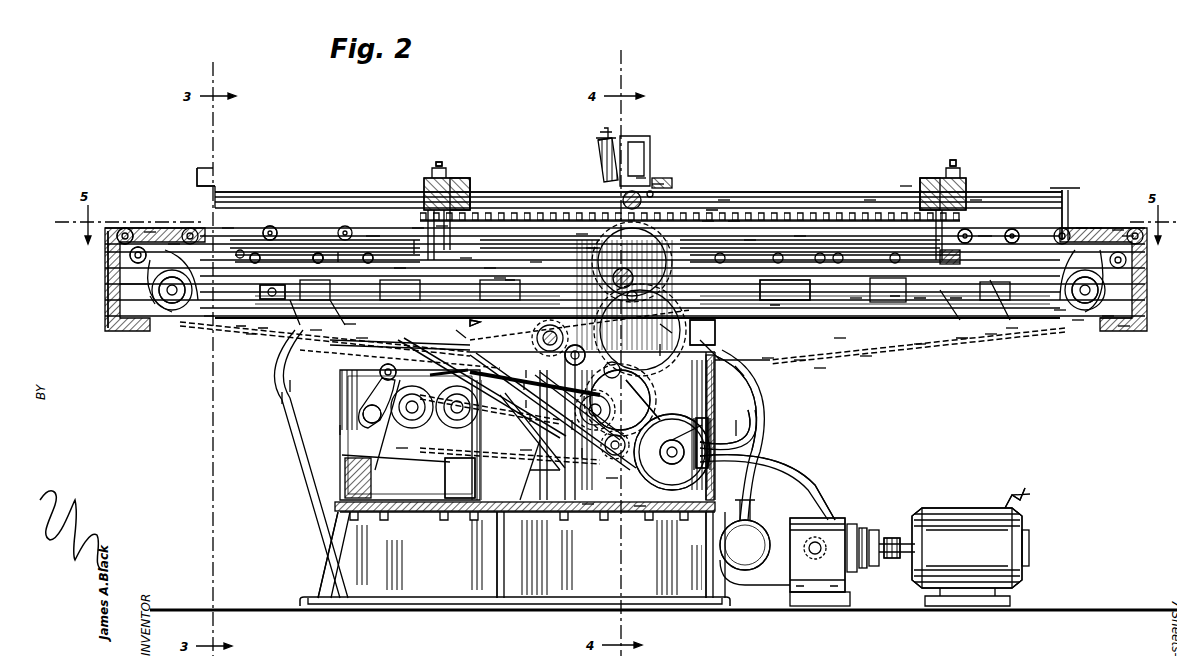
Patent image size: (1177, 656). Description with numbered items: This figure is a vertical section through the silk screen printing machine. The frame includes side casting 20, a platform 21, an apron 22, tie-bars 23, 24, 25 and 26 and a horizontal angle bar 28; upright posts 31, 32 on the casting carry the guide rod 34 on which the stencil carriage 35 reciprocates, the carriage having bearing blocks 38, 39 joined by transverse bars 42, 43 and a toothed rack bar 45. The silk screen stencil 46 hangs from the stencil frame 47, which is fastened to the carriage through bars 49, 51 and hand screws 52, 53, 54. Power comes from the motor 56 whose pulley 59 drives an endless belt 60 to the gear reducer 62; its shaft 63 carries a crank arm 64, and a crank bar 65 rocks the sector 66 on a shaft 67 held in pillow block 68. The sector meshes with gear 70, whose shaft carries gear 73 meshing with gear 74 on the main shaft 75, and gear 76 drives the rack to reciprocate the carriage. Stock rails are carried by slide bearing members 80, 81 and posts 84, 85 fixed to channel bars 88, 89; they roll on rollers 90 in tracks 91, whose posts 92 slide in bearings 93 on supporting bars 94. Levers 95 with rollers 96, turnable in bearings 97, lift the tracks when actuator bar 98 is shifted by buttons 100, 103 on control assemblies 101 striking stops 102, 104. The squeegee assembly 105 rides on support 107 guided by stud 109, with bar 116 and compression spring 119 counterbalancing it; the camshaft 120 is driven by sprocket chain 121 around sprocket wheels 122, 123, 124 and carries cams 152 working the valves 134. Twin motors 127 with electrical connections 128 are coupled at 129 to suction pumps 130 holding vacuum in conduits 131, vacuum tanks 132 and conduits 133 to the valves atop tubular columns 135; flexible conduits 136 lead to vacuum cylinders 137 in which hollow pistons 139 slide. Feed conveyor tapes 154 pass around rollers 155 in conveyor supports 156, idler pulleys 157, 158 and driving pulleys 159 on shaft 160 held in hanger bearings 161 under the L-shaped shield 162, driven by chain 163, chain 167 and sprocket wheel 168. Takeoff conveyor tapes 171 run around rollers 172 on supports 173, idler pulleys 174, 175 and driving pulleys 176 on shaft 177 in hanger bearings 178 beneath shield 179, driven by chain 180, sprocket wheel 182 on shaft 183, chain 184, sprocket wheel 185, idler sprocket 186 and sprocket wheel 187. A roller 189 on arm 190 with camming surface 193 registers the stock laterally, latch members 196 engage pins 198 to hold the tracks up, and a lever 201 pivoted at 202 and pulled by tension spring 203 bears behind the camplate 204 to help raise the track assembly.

The side casting 20 is at (382, 555).
The platform 21 is at (520, 511).
The apron 22 is at (706, 544).
The tie-bar 23 is at (315, 333).
The tie-bar 24 is at (480, 322).
The tie-bar 25 is at (700, 328).
The tie-bar 26 is at (990, 335).
The angle bar 28 is at (125, 288).
The upright post 31 is at (196, 190).
The upright post 32 is at (1064, 192).
The guide rod 34 is at (300, 192).
The stencil carriage 35 is at (712, 210).
The bearing block 38 is at (442, 226).
The bearing block 39 is at (976, 200).
The transverse bar 42 is at (466, 258).
The transverse bar 43 is at (936, 185).
The rack bar 45 is at (734, 220).
The silk screen stencil 46 is at (680, 402).
The stencil frame 47 is at (764, 192).
The bar 49 is at (468, 178).
The bar 51 is at (906, 185).
The hand screw 52 is at (438, 170).
The hand screw 53 is at (672, 452).
The hand screw 54 is at (958, 166).
The motor 56 is at (702, 418).
The pulley 59 is at (672, 492).
The endless belt 60 is at (534, 418).
The gear reducer 62 is at (345, 430).
The gear reducer shaft 63 is at (360, 408).
The crank arm 64 is at (380, 372).
The crank bar 65 is at (575, 425).
The sector 66 is at (655, 195).
The shaft 67 is at (612, 480).
The pillow block 68 is at (640, 508).
The gear 70 is at (656, 400).
The gear 73 is at (666, 350).
The gear 74 is at (708, 220).
The main shaft 75 is at (592, 248).
The gear 76 is at (582, 234).
The vertical slide bearing member 80 is at (418, 230).
The vertical slide bearing member 81 is at (985, 236).
The post 84 is at (372, 236).
The post 85 is at (963, 236).
The channel bar 88 is at (420, 246).
The channel bar 89 is at (1009, 236).
The roller 90 is at (318, 252).
The track 91 is at (316, 254).
The post 92 is at (342, 252).
The vertical bearing 93 is at (920, 300).
The supporting bar 94 is at (856, 300).
The lever 95 is at (240, 328).
The roller 96 is at (300, 288).
The bearing 97 is at (264, 330).
The actuator bar 98 is at (240, 250).
The spring-cushioned button 100 is at (500, 278).
The control assembly 101 is at (490, 268).
The stop 102 is at (536, 262).
The spring-cushioned button 103 is at (376, 240).
The stop 104 is at (210, 318).
The squeegee assembly 105 is at (612, 140).
The inverted U-shaped support 107 is at (640, 178).
The stud 109 is at (658, 184).
The bar 116 is at (460, 335).
The counterbalancing compression spring 119 is at (450, 478).
The camshaft 120 is at (530, 374).
The endless sprocket chain 121 is at (526, 452).
The sprocket wheel 122 is at (528, 386).
The idler sprocket wheel 123 is at (588, 505).
The sprocket wheel 124 is at (400, 450).
The motor 127 is at (967, 548).
The electrical connection 128 is at (1008, 497).
The coupling 129 is at (886, 536).
The suction pump 130 is at (817, 555).
The conduit 131 is at (786, 484).
The vacuum tank 132 is at (746, 568).
The conduit 133 is at (740, 428).
The valve 134 is at (560, 366).
The tubular column 135 is at (585, 452).
The conduit 136 is at (284, 398).
The vacuum cylinder 137 is at (360, 340).
The hollow piston 139 is at (866, 358).
The cam 152 is at (530, 404).
The feed conveyor tape 154 is at (124, 228).
The roller 155 is at (270, 225).
The conveyor support 156 is at (228, 228).
The idler pulley 157 is at (130, 258).
The idler pulley 158 is at (174, 244).
The driving pulley 159 is at (152, 300).
The driving shaft 160 is at (172, 303).
The hanger bearing 161 is at (150, 232).
The L-shaped shield 162 is at (108, 246).
The chain 163 is at (350, 326).
The chain 167 is at (250, 336).
The sprocket wheel 168 is at (290, 386).
The takeoff conveyor tape 171 is at (1128, 236).
The roller 172 is at (1010, 236).
The conveyor support 173 is at (1118, 230).
The idler pulley 174 is at (1082, 228).
The idler pulley 175 is at (1124, 328).
The driving pulley 176 is at (1085, 310).
The driving shaft 177 is at (1108, 318).
The hanger bearing 178 is at (1095, 228).
The L-shaped shield 179 is at (1142, 331).
The chain 180 is at (768, 360).
The sprocket wheel 182 is at (805, 302).
The shaft 183 is at (800, 362).
The chain 184 is at (840, 340).
The sprocket wheel 185 is at (820, 370).
The idler sprocket 186 is at (1012, 330).
The sprocket wheel 187 is at (1078, 322).
The roller 189 is at (724, 200).
The arm 190 is at (800, 236).
The camming surface 193 is at (870, 200).
The latch member 196 is at (1060, 312).
The pin 198 is at (920, 345).
The lever 201 is at (744, 386).
The pivot 202 is at (740, 375).
The tension spring 203 is at (748, 440).
The camplate 204 is at (750, 240).